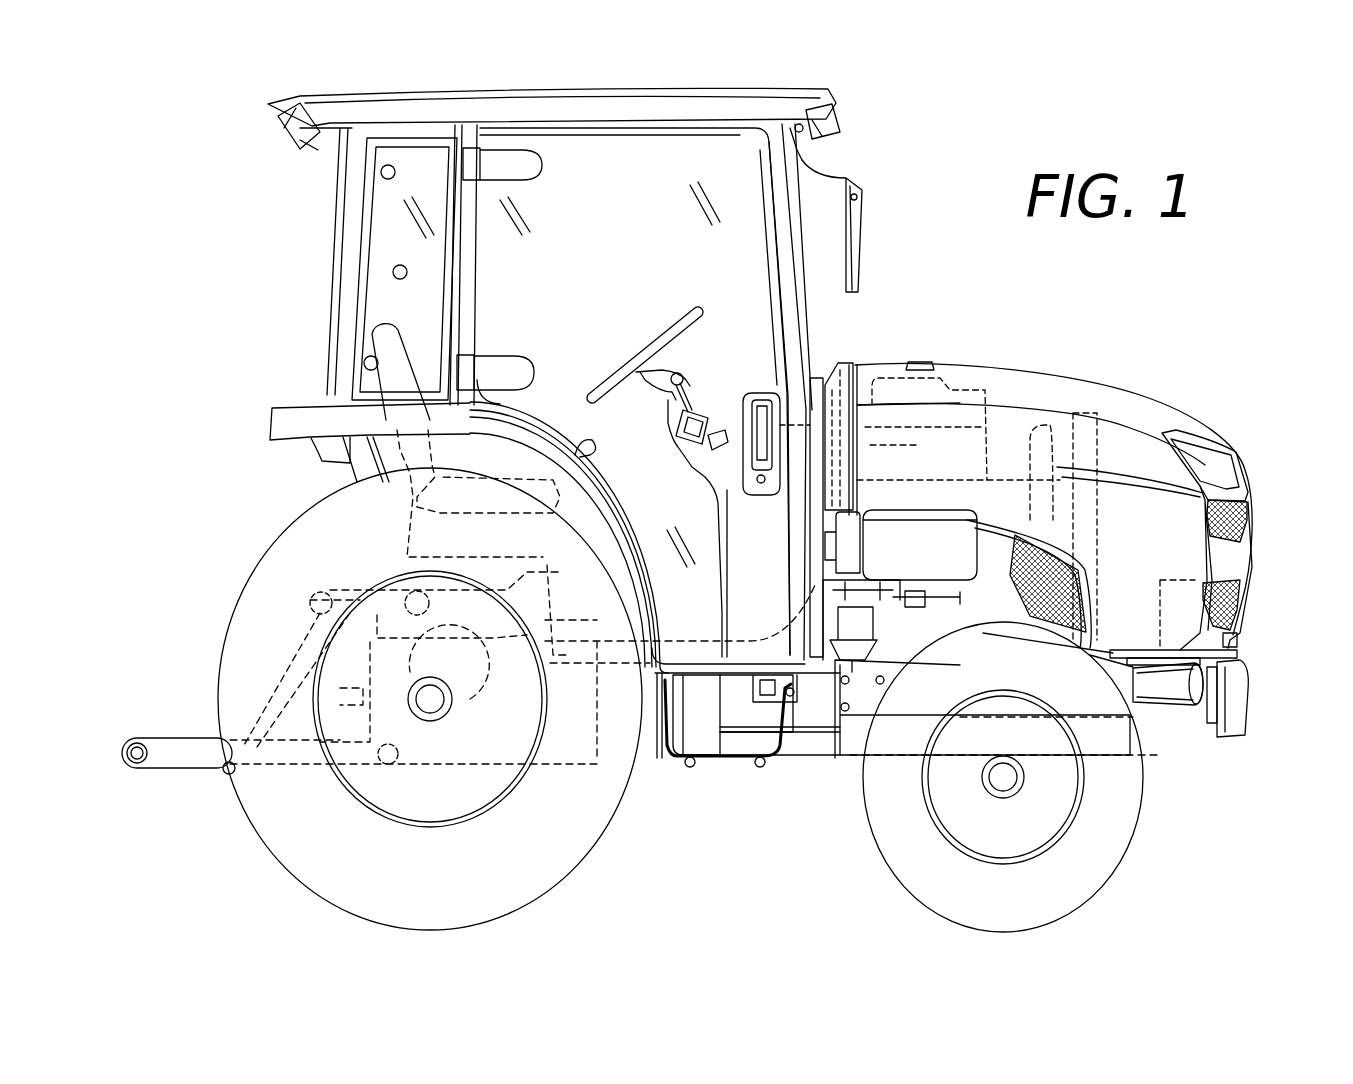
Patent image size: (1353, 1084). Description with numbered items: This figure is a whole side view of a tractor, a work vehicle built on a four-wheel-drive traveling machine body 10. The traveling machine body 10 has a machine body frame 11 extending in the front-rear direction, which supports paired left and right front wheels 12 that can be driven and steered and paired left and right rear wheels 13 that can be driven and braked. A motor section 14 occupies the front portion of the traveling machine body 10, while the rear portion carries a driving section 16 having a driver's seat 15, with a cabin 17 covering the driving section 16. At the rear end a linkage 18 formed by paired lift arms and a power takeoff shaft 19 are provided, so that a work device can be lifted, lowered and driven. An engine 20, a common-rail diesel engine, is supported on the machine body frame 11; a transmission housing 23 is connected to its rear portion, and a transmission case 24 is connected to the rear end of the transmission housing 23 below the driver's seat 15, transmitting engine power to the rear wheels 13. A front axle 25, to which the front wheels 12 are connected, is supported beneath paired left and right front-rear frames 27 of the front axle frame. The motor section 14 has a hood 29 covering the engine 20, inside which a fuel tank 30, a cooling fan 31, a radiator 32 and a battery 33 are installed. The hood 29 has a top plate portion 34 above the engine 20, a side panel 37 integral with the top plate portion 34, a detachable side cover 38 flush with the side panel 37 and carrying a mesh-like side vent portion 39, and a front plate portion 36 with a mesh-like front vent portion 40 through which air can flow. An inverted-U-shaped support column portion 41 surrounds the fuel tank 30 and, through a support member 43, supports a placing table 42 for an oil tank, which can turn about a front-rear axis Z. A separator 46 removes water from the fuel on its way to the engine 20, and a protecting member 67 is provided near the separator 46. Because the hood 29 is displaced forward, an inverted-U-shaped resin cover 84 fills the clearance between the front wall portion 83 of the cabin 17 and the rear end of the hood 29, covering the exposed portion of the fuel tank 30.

The traveling machine body 10 is at (1187, 800).
The machine body frame 11 is at (803, 780).
The front wheels 12 is at (1103, 863).
The rear wheels 13 is at (293, 843).
The motor section 14 is at (1074, 471).
The driver's seat 15 is at (405, 345).
The driving section 16 is at (620, 278).
The cabin 17 is at (800, 242).
The linkage 18 is at (178, 758).
The power takeoff shaft 19 is at (335, 698).
The engine 20 is at (910, 535).
The transmission housing 23 is at (703, 743).
The transmission case 24 is at (477, 763).
The front axle 25 is at (1002, 785).
The front-rear frames 27 is at (1178, 710).
The hood 29 is at (1175, 393).
The fuel tank 30 is at (950, 412).
The cooling fan 31 is at (1043, 470).
The radiator 32 is at (1085, 468).
The battery 33 is at (1190, 578).
The top plate portion 34 is at (993, 363).
The front plate portion 36 is at (1230, 500).
The side panel 37 is at (1060, 427).
The side cover 38 is at (1063, 560).
The side vent portion 39 is at (1083, 608).
The front vent portion 40 is at (1238, 595).
The support column portion 41 is at (835, 380).
The placing table 42 is at (950, 548).
The support member 43 is at (847, 545).
The separator 46 is at (860, 618).
The protecting member 67 is at (873, 648).
The front wall portion 83 is at (813, 390).
The cover 84 is at (838, 365).
The front-rear axis Z is at (900, 522).